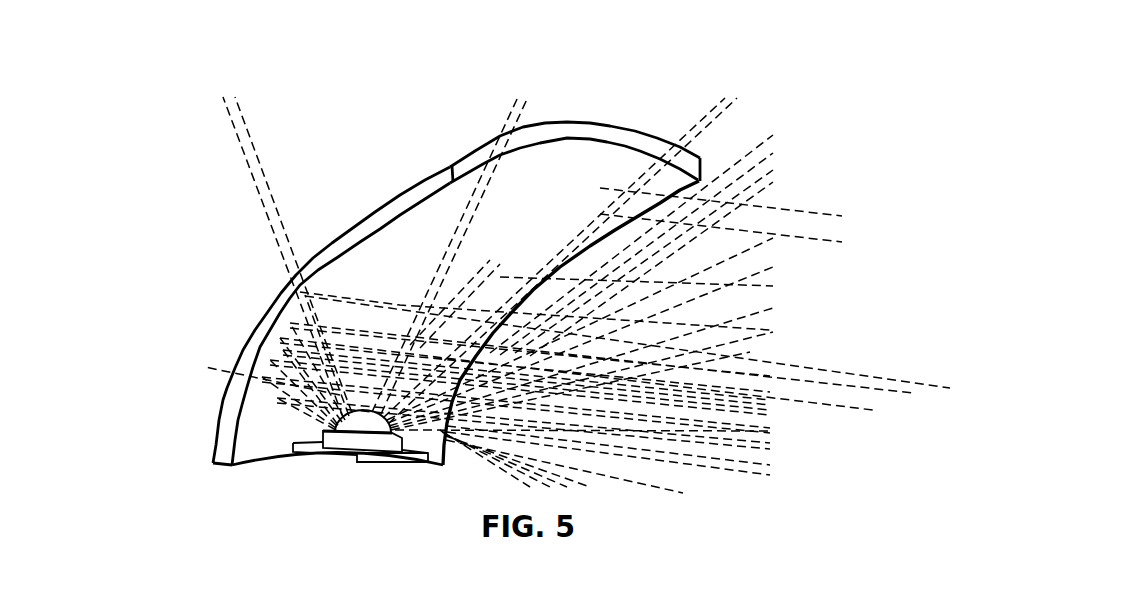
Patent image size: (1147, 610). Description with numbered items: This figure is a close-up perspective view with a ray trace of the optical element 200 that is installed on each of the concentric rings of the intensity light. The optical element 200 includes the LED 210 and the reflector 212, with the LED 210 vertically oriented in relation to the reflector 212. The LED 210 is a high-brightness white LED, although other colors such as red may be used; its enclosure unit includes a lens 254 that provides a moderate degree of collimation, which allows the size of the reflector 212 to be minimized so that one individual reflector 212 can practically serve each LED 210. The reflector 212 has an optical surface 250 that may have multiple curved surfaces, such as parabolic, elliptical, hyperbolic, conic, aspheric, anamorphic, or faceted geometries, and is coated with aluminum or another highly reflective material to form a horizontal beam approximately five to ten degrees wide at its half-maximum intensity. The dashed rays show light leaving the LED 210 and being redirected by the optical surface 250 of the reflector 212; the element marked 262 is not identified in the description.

The optical element 200 is at (704, 65).
The optical surface 250 is at (339, 232).
The reflector 212 is at (598, 122).
The lens 254 is at (350, 420).
The LED package 262 is at (370, 427).
The LED 210 is at (402, 464).